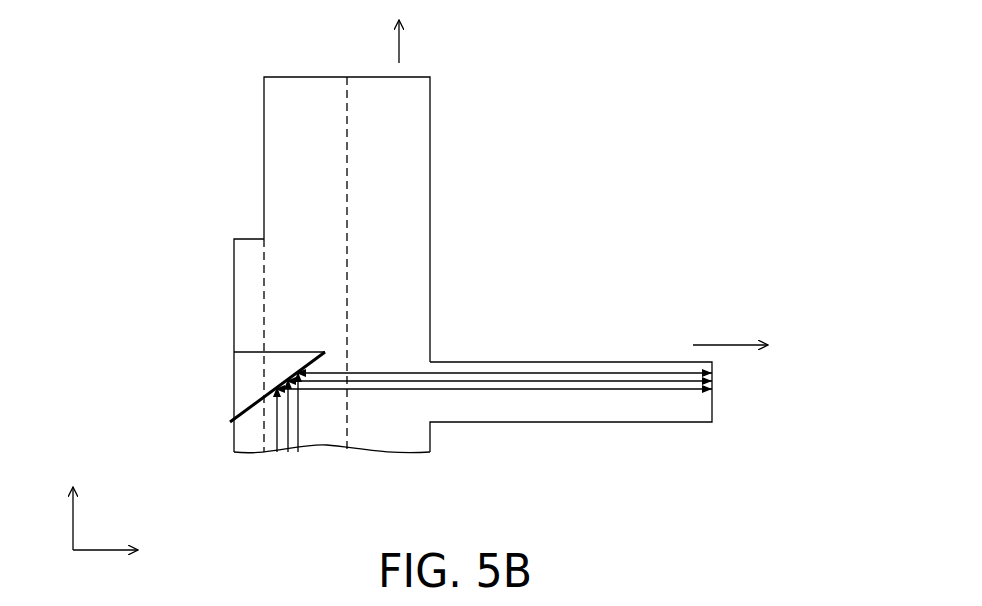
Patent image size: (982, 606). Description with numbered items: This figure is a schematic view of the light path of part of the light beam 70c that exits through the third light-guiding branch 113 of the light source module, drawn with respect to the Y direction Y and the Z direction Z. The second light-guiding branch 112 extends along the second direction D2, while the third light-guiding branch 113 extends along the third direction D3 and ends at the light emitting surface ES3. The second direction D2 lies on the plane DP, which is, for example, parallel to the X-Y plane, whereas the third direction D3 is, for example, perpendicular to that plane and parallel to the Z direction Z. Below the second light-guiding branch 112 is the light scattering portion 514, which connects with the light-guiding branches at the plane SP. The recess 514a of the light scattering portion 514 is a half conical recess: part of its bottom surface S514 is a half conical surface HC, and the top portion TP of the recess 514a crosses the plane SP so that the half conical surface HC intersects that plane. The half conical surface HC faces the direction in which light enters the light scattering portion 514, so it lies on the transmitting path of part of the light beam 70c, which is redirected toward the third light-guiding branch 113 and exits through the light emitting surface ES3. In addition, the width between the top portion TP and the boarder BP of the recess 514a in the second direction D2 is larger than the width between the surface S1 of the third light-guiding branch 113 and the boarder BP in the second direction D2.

The second light-guiding branch 112 is at (407, 137).
The third light-guiding branch 113 is at (663, 370).
The light scattering portion 514 is at (206, 233).
The recess 514a is at (251, 379).
The light beam 70c is at (312, 445).
The plane SP is at (267, 261).
The plane DP is at (350, 261).
The top portion TP is at (293, 362).
The bottom surface S514 is at (320, 362).
The surface S1 is at (555, 361).
The light emitting surface ES3 is at (715, 388).
The boarder BP is at (228, 421).
The half conical surface HC is at (249, 414).
The second direction D2 is at (418, 42).
The third direction D3 is at (730, 327).
The Y direction Y is at (72, 497).
The Z direction Z is at (116, 547).